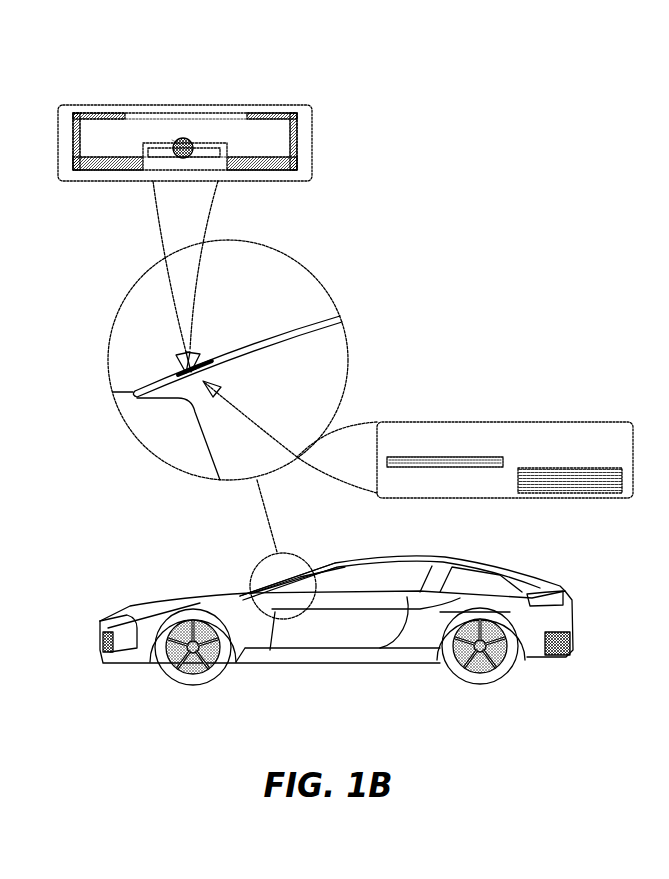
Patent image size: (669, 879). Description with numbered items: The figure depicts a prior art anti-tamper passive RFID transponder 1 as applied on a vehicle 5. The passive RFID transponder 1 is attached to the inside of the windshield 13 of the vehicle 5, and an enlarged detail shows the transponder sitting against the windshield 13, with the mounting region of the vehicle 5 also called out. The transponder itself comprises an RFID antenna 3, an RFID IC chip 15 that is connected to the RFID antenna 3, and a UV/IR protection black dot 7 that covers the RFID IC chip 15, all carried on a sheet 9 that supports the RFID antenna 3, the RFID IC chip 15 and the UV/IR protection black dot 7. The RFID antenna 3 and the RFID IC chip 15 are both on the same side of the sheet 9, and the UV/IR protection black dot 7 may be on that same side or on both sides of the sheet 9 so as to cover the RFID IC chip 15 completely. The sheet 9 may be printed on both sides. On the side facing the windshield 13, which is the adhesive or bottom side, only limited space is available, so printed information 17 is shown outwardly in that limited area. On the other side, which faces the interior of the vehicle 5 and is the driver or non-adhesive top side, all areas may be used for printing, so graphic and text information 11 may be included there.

The passive RFID transponder 1 is at (323, 109).
The RFID antenna 3 is at (72, 133).
The vehicle 5 is at (129, 591).
The UV/IR protection black dot 7 is at (168, 140).
The sheet 9 is at (252, 138).
The graphic and text information 11 is at (455, 430).
The windshield 13 is at (281, 329).
The RFID IC chip 15 is at (184, 138).
The printed information 17 is at (172, 112).